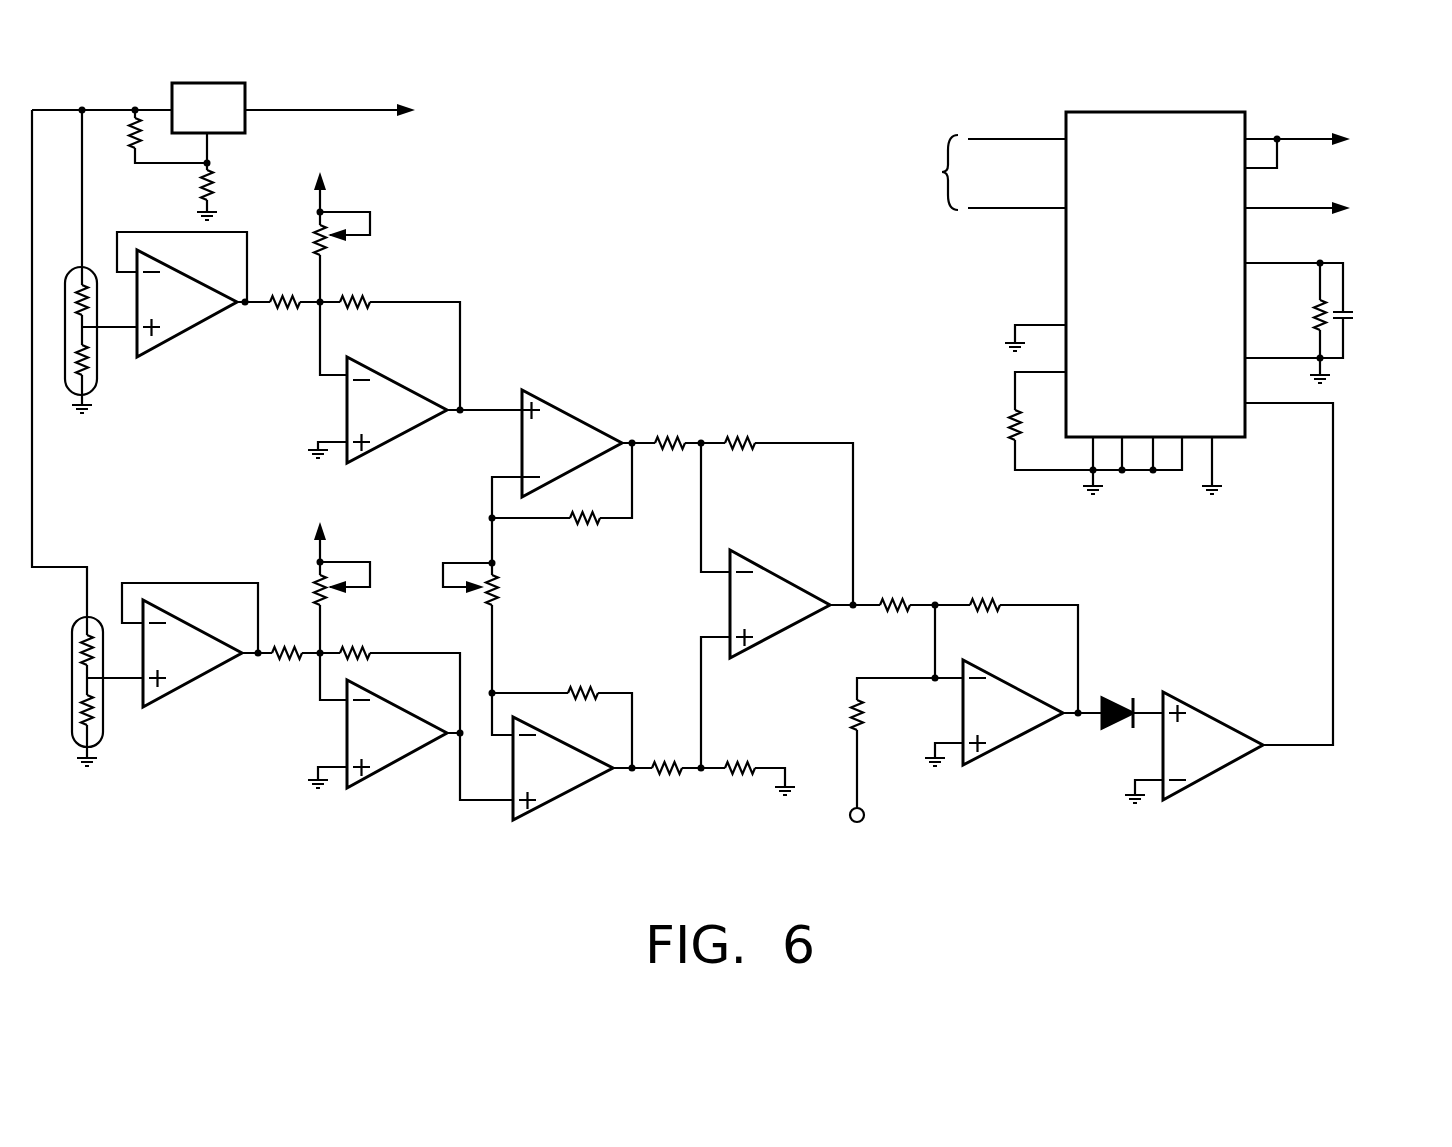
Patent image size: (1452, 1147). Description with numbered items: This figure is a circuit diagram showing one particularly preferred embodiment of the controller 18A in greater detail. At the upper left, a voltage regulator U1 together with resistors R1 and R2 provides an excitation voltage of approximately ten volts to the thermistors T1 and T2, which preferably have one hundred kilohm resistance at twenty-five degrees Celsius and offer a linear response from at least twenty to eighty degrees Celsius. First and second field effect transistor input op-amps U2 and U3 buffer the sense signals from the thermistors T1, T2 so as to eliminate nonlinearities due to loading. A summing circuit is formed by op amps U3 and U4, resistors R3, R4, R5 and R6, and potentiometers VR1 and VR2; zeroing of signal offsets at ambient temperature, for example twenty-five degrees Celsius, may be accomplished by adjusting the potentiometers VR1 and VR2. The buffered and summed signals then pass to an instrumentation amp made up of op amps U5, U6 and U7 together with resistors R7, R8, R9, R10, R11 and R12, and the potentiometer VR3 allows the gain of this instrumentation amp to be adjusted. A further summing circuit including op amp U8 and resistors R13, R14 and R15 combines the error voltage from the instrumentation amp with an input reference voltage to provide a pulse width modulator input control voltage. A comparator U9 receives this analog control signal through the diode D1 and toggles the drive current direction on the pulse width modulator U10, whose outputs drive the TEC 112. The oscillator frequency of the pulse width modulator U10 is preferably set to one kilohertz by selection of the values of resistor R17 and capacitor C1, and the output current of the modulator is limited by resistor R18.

The controller 18A is at (247, 820).
The TEC 112 is at (916, 197).
The voltage regulator U1 is at (208, 108).
The first field effect transistor input op-amp U2 is at (187, 303).
The second field effect transistor input op-amp U3 is at (295, 532).
The op amp U4 is at (397, 734).
The op amp U5 is at (572, 443).
The op amp U6 is at (563, 768).
The op amp U7 is at (780, 604).
The op amp U8 is at (1013, 712).
The comparator U9 is at (1213, 746).
The pulse width modulator U10 is at (1155, 274).
The thermistor T1 is at (69, 310).
The thermistor T2 is at (71, 661).
The diode D1 is at (1122, 697).
The capacitor C1 is at (1359, 302).
The resistor R1 is at (117, 137).
The resistor R2 is at (226, 187).
The resistor R3 is at (285, 321).
The resistor R4 is at (357, 321).
The resistor R5 is at (285, 671).
The resistor R6 is at (352, 640).
The resistor R7 is at (585, 536).
The resistor R8 is at (582, 679).
The resistor R9 is at (667, 461).
The resistor R10 is at (743, 461).
The resistor R11 is at (660, 786).
The resistor R12 is at (737, 786).
The resistor R13 is at (895, 591).
The resistor R14 is at (983, 591).
The resistor R15 is at (886, 715).
The resistor R17 is at (1290, 315).
The resistor R18 is at (987, 423).
The potentiometer VR1 is at (294, 234).
The potentiometer VR2 is at (293, 580).
The potentiometer VR3 is at (521, 593).